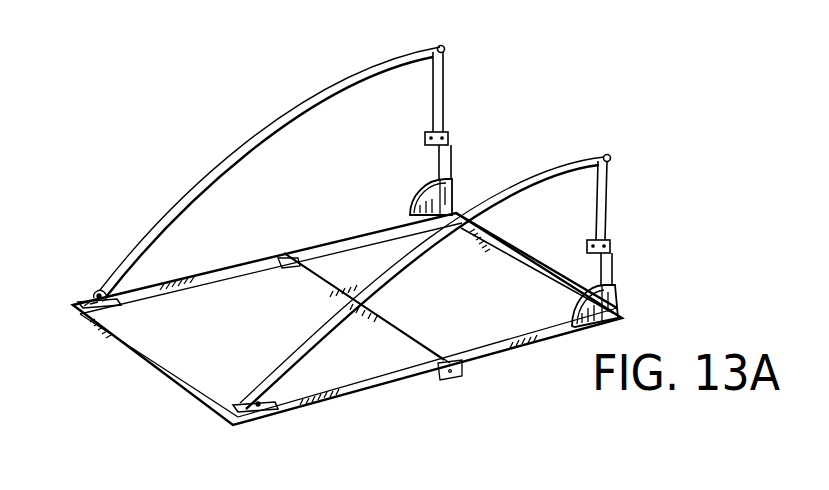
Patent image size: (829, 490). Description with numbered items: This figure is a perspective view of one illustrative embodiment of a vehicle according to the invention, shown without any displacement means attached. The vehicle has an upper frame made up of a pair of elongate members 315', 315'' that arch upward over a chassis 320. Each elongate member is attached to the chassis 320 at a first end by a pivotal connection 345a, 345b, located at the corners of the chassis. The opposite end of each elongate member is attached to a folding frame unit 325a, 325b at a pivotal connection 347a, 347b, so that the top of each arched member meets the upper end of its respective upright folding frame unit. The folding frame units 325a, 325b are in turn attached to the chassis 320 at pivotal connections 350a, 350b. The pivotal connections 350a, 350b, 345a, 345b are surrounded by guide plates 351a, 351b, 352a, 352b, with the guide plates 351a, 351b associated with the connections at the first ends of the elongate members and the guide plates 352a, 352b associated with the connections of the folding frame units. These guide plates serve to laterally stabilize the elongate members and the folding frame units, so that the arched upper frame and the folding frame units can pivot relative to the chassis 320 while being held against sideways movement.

The elongate member 315'' is at (270, 172).
The elongate member 315' is at (422, 283).
The chassis 320 is at (497, 352).
The folding frame unit 325a is at (600, 190).
The folding frame unit 325b is at (435, 87).
The pivotal connection 345a is at (250, 420).
The pivotal connection 345b is at (72, 303).
The pivotal connection 347a is at (608, 155).
The pivotal connection 347b is at (446, 52).
The pivotal connection 350a is at (606, 310).
The pivotal connection 350b is at (447, 200).
The guide plate 351a is at (262, 405).
The guide plate 351b is at (100, 290).
The guide plate 352a is at (573, 312).
The guide plate 352b is at (413, 200).